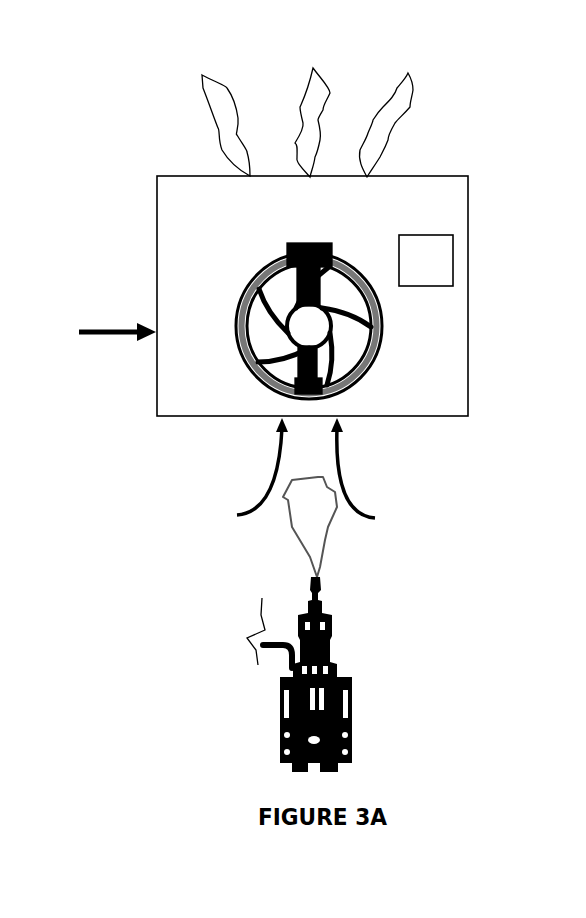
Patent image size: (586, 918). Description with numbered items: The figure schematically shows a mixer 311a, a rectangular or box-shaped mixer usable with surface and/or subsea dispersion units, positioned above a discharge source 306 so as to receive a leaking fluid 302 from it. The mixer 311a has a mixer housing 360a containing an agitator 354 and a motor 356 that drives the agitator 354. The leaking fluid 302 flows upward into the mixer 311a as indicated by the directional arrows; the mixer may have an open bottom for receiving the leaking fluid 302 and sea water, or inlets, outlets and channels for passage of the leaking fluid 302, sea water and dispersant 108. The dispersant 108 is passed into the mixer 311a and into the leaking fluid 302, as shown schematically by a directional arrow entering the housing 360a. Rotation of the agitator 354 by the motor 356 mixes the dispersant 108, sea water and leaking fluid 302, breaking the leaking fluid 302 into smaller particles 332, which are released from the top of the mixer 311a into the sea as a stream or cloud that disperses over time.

The mixer 311a is at (128, 138).
The particles 332 is at (332, 70).
The mixer housing 360a is at (468, 190).
The motor 356 is at (453, 262).
The dispersant 108 is at (88, 334).
The agitator 354 is at (300, 392).
The leaking fluid 302 is at (313, 505).
The discharge source 306 is at (337, 670).